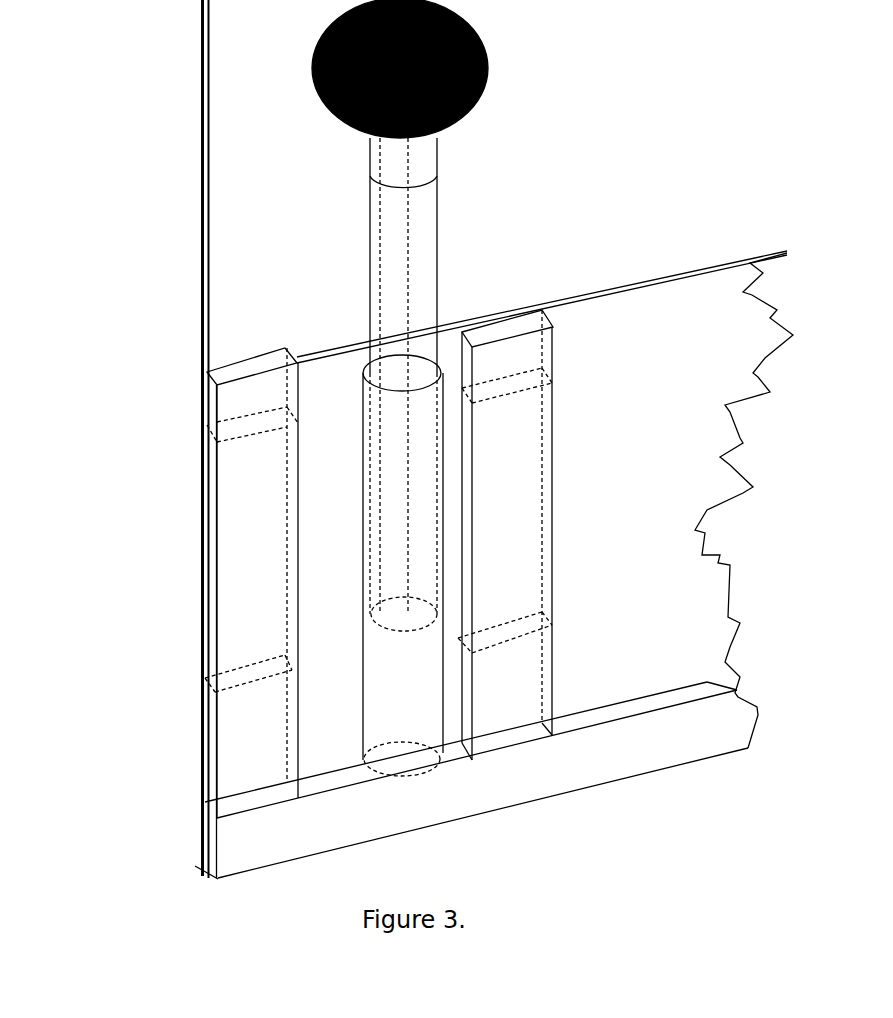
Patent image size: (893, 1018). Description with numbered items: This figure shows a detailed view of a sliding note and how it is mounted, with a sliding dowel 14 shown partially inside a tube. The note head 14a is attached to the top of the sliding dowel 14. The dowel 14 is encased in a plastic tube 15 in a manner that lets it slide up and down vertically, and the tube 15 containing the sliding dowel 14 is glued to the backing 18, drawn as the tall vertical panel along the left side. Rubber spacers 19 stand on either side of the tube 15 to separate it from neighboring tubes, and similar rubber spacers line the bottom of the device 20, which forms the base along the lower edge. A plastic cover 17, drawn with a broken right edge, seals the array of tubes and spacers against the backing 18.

The sliding dowel 14 is at (440, 178).
The note head 14a is at (495, 55).
The plastic tube 15 is at (450, 426).
The plastic cover 17 is at (767, 292).
The backing 18 is at (201, 117).
The rubber spacer 19 is at (565, 489).
The device 20 is at (758, 723).